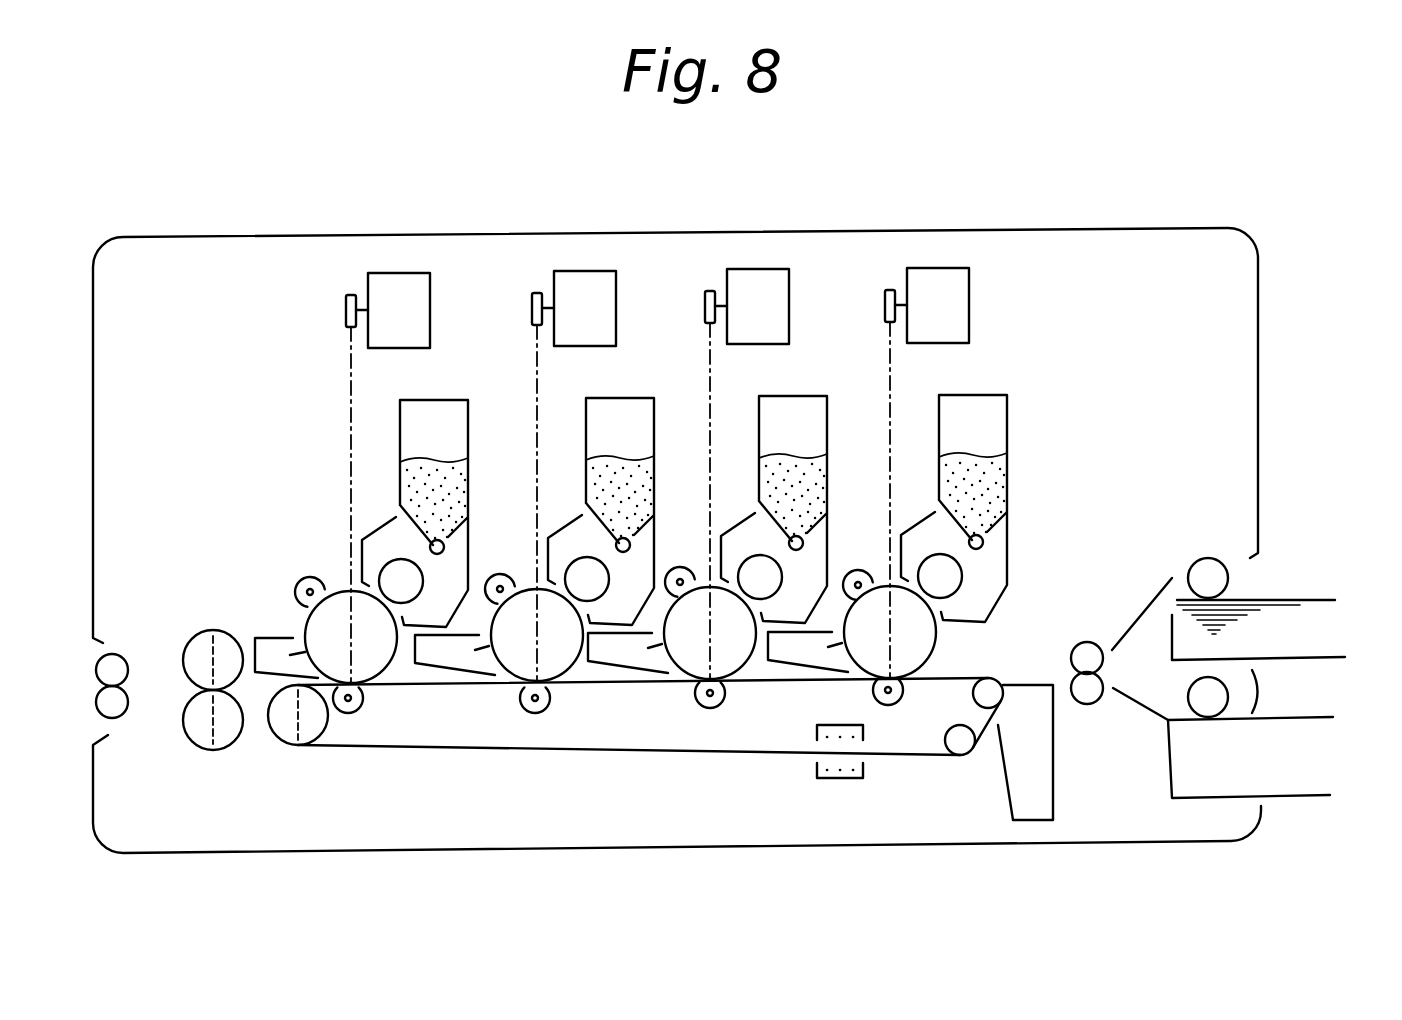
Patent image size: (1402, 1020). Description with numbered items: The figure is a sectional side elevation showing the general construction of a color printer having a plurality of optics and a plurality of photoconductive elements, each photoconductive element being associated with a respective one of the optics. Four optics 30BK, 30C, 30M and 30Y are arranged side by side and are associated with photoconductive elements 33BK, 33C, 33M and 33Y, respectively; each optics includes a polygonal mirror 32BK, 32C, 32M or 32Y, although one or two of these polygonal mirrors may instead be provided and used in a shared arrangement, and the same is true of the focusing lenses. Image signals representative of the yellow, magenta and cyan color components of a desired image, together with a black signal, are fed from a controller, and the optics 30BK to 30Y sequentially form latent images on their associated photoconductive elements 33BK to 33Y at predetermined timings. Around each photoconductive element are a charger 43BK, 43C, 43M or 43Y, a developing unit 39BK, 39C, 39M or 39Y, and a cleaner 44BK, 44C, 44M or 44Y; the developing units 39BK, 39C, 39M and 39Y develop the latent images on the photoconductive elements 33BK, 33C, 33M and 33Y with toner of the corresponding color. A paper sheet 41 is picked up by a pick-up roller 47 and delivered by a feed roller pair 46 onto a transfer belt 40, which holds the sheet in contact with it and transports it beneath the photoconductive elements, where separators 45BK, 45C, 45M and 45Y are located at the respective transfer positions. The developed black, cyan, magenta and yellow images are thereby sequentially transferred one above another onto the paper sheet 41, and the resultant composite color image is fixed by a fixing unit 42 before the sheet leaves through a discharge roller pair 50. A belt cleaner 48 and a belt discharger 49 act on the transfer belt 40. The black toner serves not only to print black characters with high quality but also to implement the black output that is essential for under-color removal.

The optics 30Y is at (335, 378).
The optics 30M is at (498, 439).
The optics 30C is at (673, 421).
The optics 30BK is at (862, 420).
The polygonal mirror 32Y is at (398, 273).
The polygonal mirror 32M is at (574, 271).
The polygonal mirror 32C is at (747, 269).
The polygonal mirror 32BK is at (937, 269).
The photoconductive element 33Y is at (380, 684).
The photoconductive element 33M is at (542, 693).
The photoconductive element 33C is at (715, 694).
The photoconductive element 33BK is at (942, 632).
The developing unit 39Y is at (396, 517).
The developing unit 39M is at (588, 511).
The developing unit 39C is at (762, 509).
The developing unit 39BK is at (933, 508).
The charger 43Y is at (308, 579).
The charger 43M is at (507, 543).
The charger 43C is at (681, 532).
The charger 43BK is at (858, 585).
The cleaner 44Y is at (265, 636).
The cleaner 44M is at (455, 716).
The cleaner 44C is at (628, 715).
The cleaner 44BK is at (819, 681).
The separator 45Y is at (363, 712).
The separator 45M is at (518, 793).
The separator 45C is at (694, 790).
The separator 45BK is at (917, 746).
The transfer belt 40 is at (400, 746).
The paper sheet 41 is at (1283, 617).
The fixing unit 42 is at (193, 745).
The feed roller pair 46 is at (1093, 707).
The pick-up roller 47 is at (1205, 558).
The belt cleaner 48 is at (1056, 800).
The belt discharger 49 is at (835, 780).
The discharge roller pair 50 is at (132, 682).